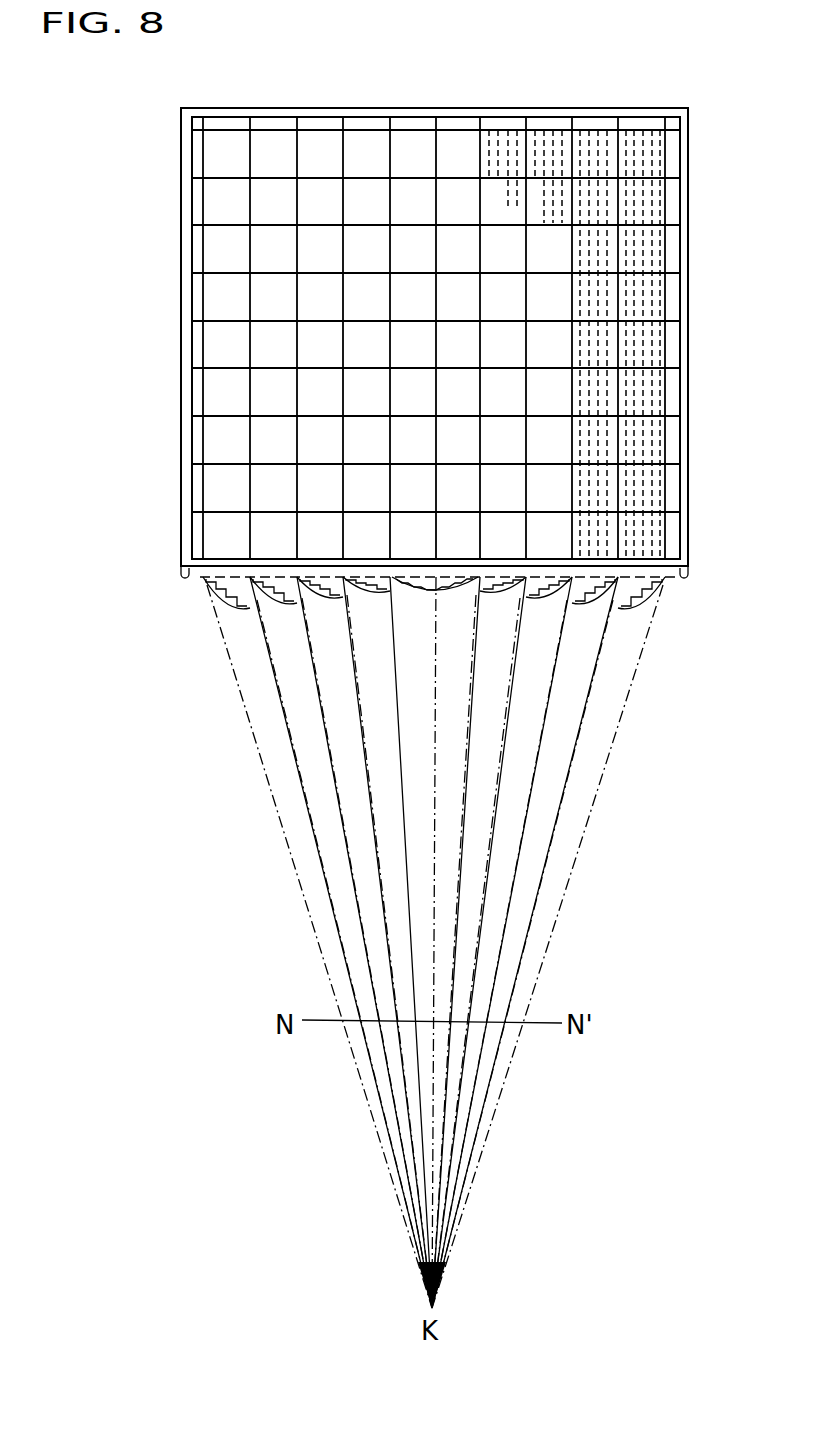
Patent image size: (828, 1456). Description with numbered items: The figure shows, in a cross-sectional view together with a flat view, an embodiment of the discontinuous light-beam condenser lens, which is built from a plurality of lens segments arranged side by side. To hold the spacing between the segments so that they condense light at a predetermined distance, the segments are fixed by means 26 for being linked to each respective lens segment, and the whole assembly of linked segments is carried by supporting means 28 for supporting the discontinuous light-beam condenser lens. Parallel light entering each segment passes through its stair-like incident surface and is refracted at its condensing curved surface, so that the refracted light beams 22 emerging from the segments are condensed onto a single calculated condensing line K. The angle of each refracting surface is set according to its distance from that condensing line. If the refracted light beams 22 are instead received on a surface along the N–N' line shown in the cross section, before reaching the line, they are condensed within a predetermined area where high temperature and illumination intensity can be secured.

The refracted light beams 22 is at (586, 831).
The means for being linked to respective lens segment 26 is at (670, 275).
The supporting means 28 is at (686, 505).